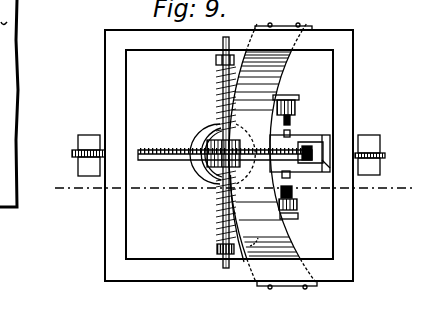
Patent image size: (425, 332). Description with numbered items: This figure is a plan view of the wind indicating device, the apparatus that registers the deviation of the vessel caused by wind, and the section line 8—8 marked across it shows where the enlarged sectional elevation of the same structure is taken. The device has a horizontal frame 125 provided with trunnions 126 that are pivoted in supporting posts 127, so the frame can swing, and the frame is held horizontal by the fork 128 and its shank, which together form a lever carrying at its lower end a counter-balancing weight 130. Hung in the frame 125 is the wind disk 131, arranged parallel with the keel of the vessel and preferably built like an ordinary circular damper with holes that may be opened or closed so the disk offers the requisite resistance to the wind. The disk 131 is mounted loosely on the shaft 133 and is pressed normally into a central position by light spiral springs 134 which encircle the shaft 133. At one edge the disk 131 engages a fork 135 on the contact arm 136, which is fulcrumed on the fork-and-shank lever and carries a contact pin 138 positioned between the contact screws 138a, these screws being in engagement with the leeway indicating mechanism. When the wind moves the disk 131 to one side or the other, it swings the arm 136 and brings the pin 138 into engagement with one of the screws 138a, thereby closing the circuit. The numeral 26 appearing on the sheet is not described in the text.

The section line 8— 8 is at (233, 189).
The spool flange 26 is at (73, 152).
The horizontal frame 125 is at (350, 78).
The trunnions 126 is at (385, 157).
The supporting posts 127 is at (92, 137).
The fork 128 is at (284, 78).
The counter-balancing weight 130 is at (211, 136).
The wind disk 131 is at (163, 160).
The shaft 133 is at (216, 48).
The spiral springs 134 is at (221, 96).
The fork 135 is at (312, 140).
The contact arm 136 is at (327, 166).
The contact pin 138 is at (291, 126).
The contact screws 138a is at (296, 110).